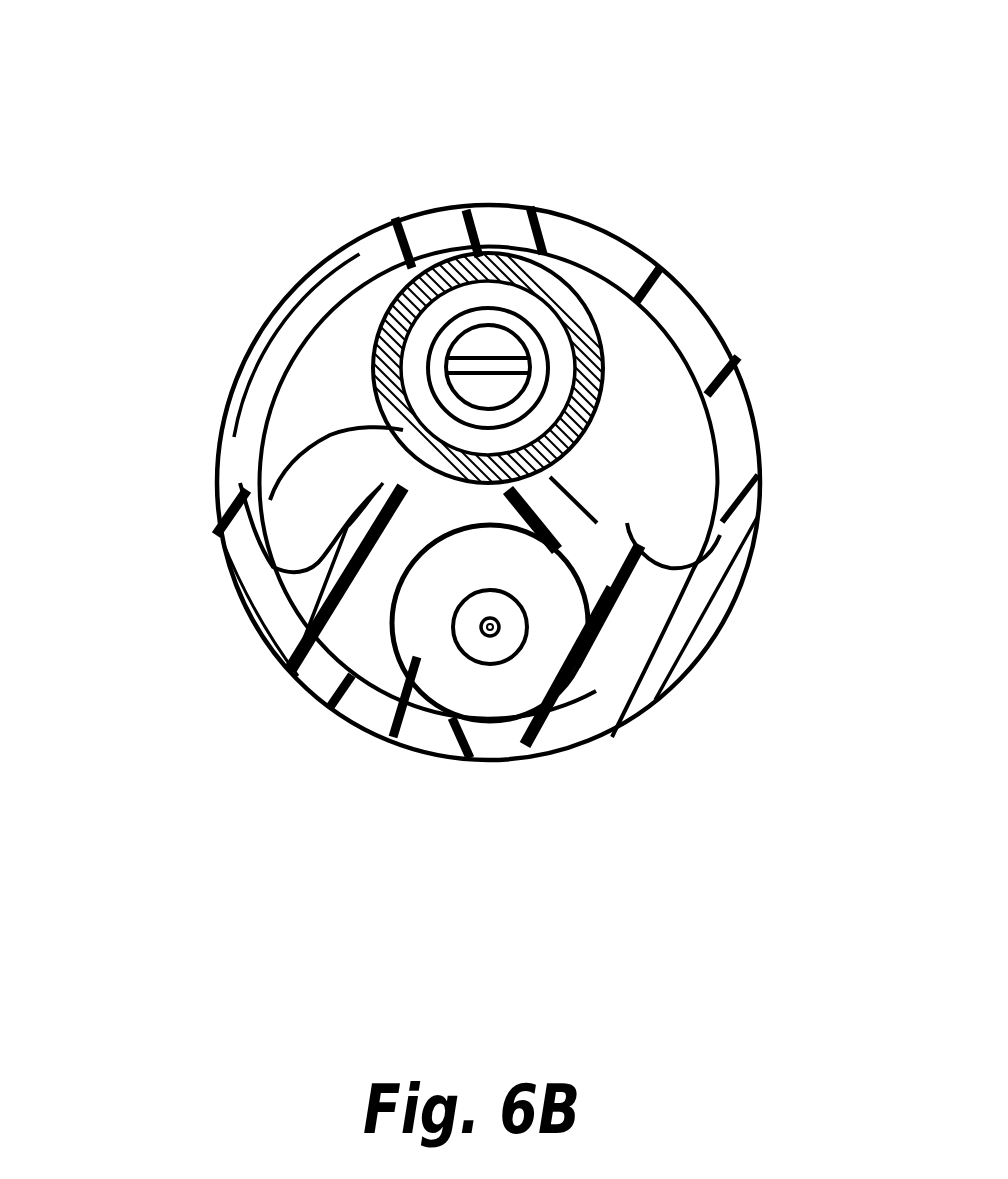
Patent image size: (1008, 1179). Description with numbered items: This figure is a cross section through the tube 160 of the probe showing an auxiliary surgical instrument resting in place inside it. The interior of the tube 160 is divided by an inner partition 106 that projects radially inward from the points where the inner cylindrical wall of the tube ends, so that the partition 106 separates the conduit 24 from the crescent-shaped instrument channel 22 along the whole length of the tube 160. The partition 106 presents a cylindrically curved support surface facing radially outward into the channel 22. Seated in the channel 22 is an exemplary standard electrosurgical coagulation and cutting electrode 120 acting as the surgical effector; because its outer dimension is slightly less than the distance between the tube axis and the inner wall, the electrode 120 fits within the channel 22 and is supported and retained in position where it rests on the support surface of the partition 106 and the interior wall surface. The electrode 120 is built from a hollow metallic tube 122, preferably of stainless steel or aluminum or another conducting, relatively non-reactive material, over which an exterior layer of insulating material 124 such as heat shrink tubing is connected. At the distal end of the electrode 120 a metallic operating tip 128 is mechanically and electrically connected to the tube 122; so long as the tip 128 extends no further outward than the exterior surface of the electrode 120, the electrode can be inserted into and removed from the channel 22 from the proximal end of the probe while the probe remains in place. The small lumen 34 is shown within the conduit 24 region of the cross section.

The tube 160 is at (313, 243).
The electrosurgical coagulation and cutting electrode 120 is at (388, 298).
The operating tip 128 is at (488, 356).
The channel 22 is at (632, 350).
The inner partition 106 is at (613, 523).
The hollow metallic tube 122 is at (437, 343).
The exterior layer of insulating material 124 is at (267, 515).
The guidewire lumen 34 is at (473, 640).
The conduit 24 is at (530, 682).